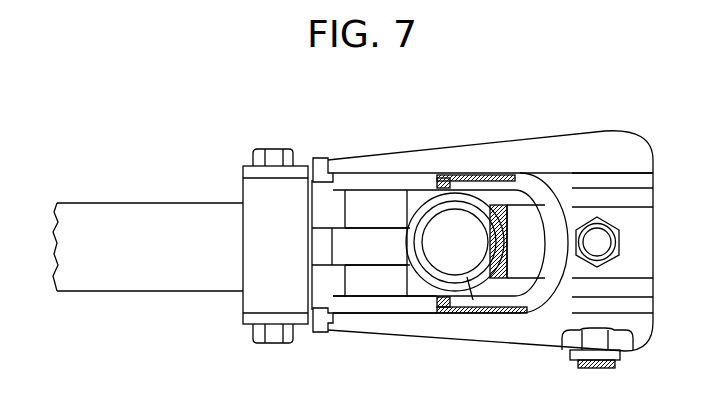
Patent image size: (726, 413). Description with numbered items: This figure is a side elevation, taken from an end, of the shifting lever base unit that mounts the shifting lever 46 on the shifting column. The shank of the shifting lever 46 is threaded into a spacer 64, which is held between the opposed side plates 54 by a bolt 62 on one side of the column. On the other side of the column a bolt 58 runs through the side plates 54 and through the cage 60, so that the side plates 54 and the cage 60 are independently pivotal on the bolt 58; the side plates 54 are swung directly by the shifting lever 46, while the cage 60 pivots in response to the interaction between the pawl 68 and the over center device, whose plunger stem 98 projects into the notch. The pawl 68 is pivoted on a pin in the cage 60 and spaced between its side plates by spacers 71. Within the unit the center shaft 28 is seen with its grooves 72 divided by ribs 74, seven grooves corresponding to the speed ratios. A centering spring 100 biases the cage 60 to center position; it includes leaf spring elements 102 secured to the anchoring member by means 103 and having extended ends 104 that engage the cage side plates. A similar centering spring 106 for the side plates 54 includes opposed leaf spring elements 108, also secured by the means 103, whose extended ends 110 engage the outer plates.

The shifting lever 46 is at (201, 302).
The bolt 62 is at (260, 154).
The spacer 64 is at (258, 190).
The extended ends 110 is at (320, 156).
The leaf spring elements 108 is at (353, 158).
The centering spring 106 is at (405, 150).
The extended ends 104 is at (447, 180).
The centering spring 100 is at (514, 165).
The leaf spring elements 102 is at (550, 198).
The securing means 103 is at (605, 242).
The bolt 58 is at (613, 364).
The spacers 71 is at (357, 209).
The stem 98 is at (320, 248).
The pawl 68 is at (368, 247).
The cage 60 is at (367, 313).
The grooves 72 is at (418, 288).
The ribs 74 is at (444, 292).
The side plates 54 is at (450, 323).
The center shaft 28 is at (470, 310).